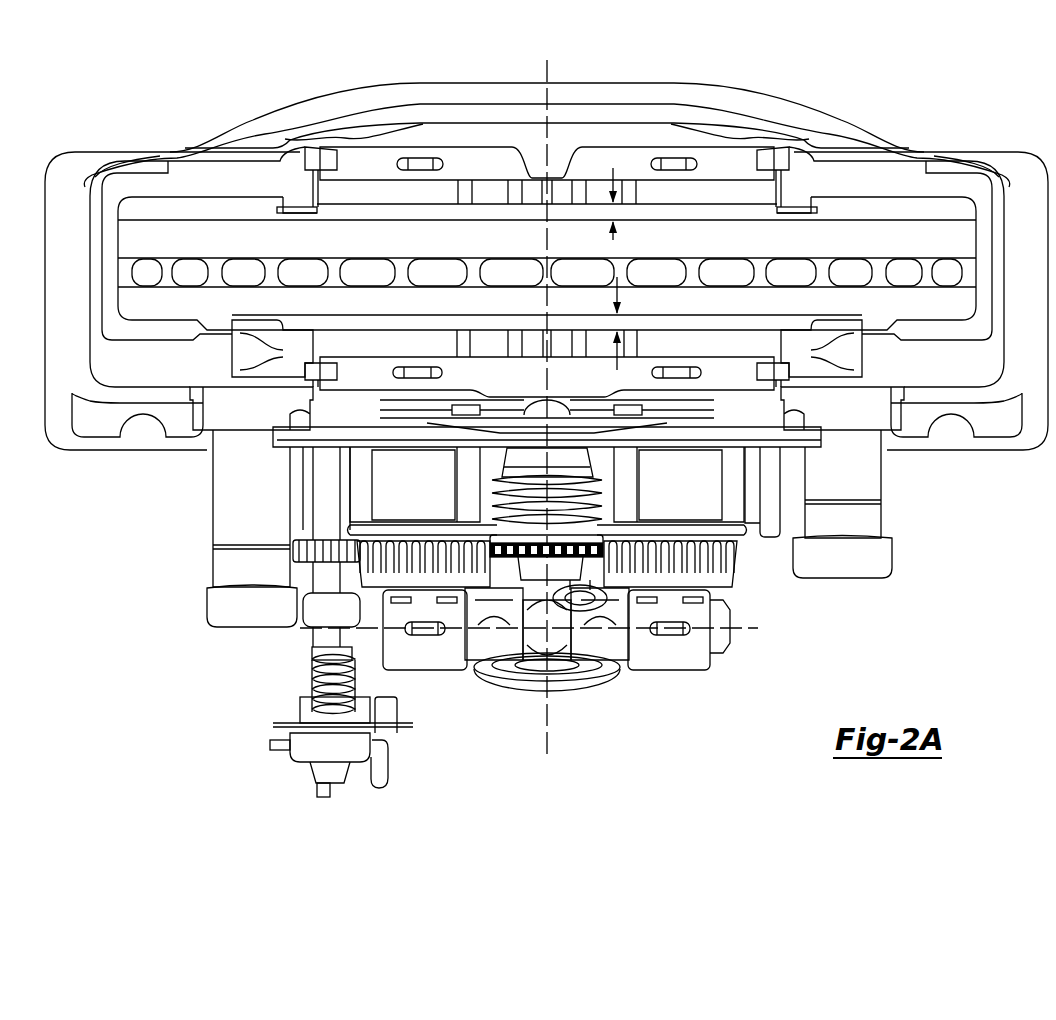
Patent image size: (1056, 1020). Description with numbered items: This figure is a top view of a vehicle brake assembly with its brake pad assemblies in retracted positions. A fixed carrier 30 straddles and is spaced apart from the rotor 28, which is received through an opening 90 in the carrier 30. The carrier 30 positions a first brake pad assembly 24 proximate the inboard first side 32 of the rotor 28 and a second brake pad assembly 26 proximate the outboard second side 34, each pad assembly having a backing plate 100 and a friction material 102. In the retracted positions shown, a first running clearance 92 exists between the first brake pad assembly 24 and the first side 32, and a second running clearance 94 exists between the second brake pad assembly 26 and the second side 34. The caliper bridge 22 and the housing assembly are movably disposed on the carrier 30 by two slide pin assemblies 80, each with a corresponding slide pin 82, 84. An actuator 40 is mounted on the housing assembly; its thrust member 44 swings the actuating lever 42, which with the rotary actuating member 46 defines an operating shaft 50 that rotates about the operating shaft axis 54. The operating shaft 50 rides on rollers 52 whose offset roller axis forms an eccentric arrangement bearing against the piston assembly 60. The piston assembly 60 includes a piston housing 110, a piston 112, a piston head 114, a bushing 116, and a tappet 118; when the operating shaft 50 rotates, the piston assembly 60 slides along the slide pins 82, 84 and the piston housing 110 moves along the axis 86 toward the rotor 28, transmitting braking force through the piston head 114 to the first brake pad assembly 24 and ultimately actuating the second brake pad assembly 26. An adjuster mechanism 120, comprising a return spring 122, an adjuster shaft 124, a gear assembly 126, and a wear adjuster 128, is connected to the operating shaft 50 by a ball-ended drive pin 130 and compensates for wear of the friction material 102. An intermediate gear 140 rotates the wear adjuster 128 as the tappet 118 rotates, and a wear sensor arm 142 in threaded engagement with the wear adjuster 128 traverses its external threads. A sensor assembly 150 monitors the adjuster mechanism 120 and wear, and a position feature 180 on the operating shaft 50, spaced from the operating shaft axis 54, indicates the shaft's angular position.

The caliper bridge 22 is at (689, 96).
The first brake pad assembly 24 is at (527, 330).
The second brake pad assembly 26 is at (524, 180).
The rotor 28 is at (966, 252).
The carrier 30 is at (113, 456).
The first side 32 is at (935, 320).
The second side 34 is at (872, 215).
The actuator 40 is at (598, 696).
The actuating lever 42 is at (517, 648).
The thrust member 44 is at (543, 692).
The rotary actuating member 46 is at (498, 621).
The operating shaft 50 is at (732, 667).
The rollers 52 is at (417, 604).
The operating shaft axis 54 is at (757, 630).
The piston assembly 60 is at (800, 586).
The slide pin assembly 80 is at (197, 558).
The slide pin 82 is at (239, 483).
The slide pin 84 is at (833, 480).
The axis 86 is at (545, 70).
The opening 90 is at (940, 207).
The first running clearance 92 is at (622, 325).
The second running clearance 94 is at (614, 213).
The backing plate 100 is at (318, 158).
The friction material 102 is at (705, 200).
The piston housing 110 is at (762, 540).
The piston 112 is at (402, 507).
The piston head 114 is at (480, 390).
The bushing 116 is at (518, 398).
The tappet 118 is at (735, 589).
The adjuster mechanism 120 is at (641, 500).
The return spring 122 is at (494, 500).
The adjuster shaft 124 is at (534, 577).
The gear assembly 126 is at (533, 464).
The wear adjuster 128 is at (300, 641).
The drive pin 130 is at (578, 594).
The intermediate gear 140 is at (300, 572).
The wear sensor arm 142 is at (318, 620).
The sensor assembly 150 is at (318, 797).
The position feature 180 is at (212, 547).